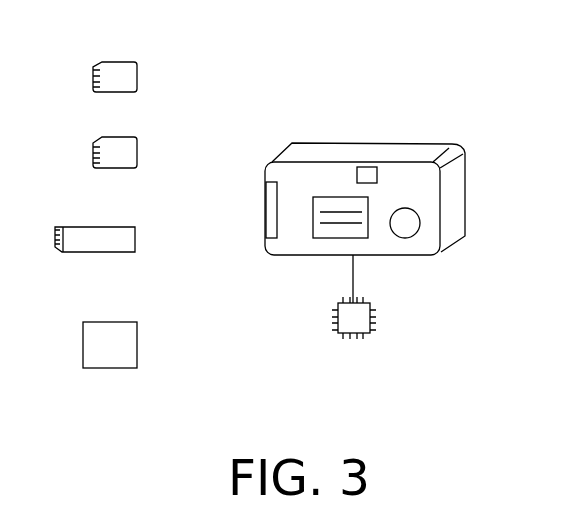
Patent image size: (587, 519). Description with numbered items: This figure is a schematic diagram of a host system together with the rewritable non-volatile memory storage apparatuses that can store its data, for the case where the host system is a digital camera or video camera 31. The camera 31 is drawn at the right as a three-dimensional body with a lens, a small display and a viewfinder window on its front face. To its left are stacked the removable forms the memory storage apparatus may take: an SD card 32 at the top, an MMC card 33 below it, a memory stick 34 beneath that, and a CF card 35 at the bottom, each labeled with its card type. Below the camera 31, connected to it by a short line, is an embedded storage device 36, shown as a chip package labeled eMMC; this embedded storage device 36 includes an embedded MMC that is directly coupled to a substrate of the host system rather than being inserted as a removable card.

The digital camera 31 is at (465, 187).
The SD card 32 is at (137, 69).
The MMC card 33 is at (137, 147).
The memory stick 34 is at (135, 238).
The CF card 35 is at (137, 338).
The embedded storage device 36 is at (372, 320).